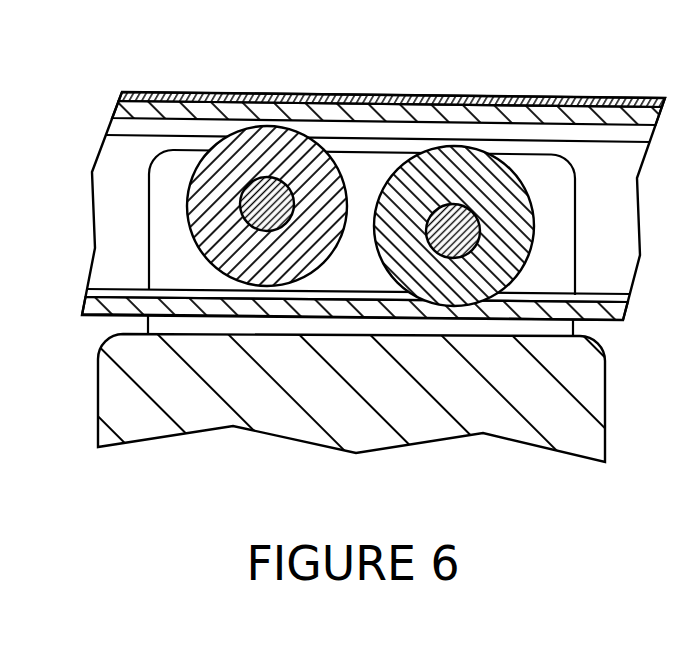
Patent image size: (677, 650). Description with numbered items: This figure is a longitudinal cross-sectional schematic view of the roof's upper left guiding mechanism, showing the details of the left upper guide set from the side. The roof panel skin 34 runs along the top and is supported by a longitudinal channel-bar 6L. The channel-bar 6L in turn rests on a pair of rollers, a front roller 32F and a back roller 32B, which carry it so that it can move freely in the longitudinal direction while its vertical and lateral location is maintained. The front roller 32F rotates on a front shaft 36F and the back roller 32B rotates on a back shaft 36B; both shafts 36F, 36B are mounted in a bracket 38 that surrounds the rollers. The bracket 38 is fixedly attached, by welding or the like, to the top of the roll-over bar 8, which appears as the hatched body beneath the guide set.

The front roller 32F is at (220, 163).
The front shaft 36F is at (272, 176).
The longitudinal channel-bar 6L is at (329, 113).
The roof panel skin 34 is at (399, 99).
The back shaft 36B is at (465, 200).
The back roller 32B is at (548, 190).
The bracket 38 is at (649, 98).
The roll-over bar 8 is at (583, 367).